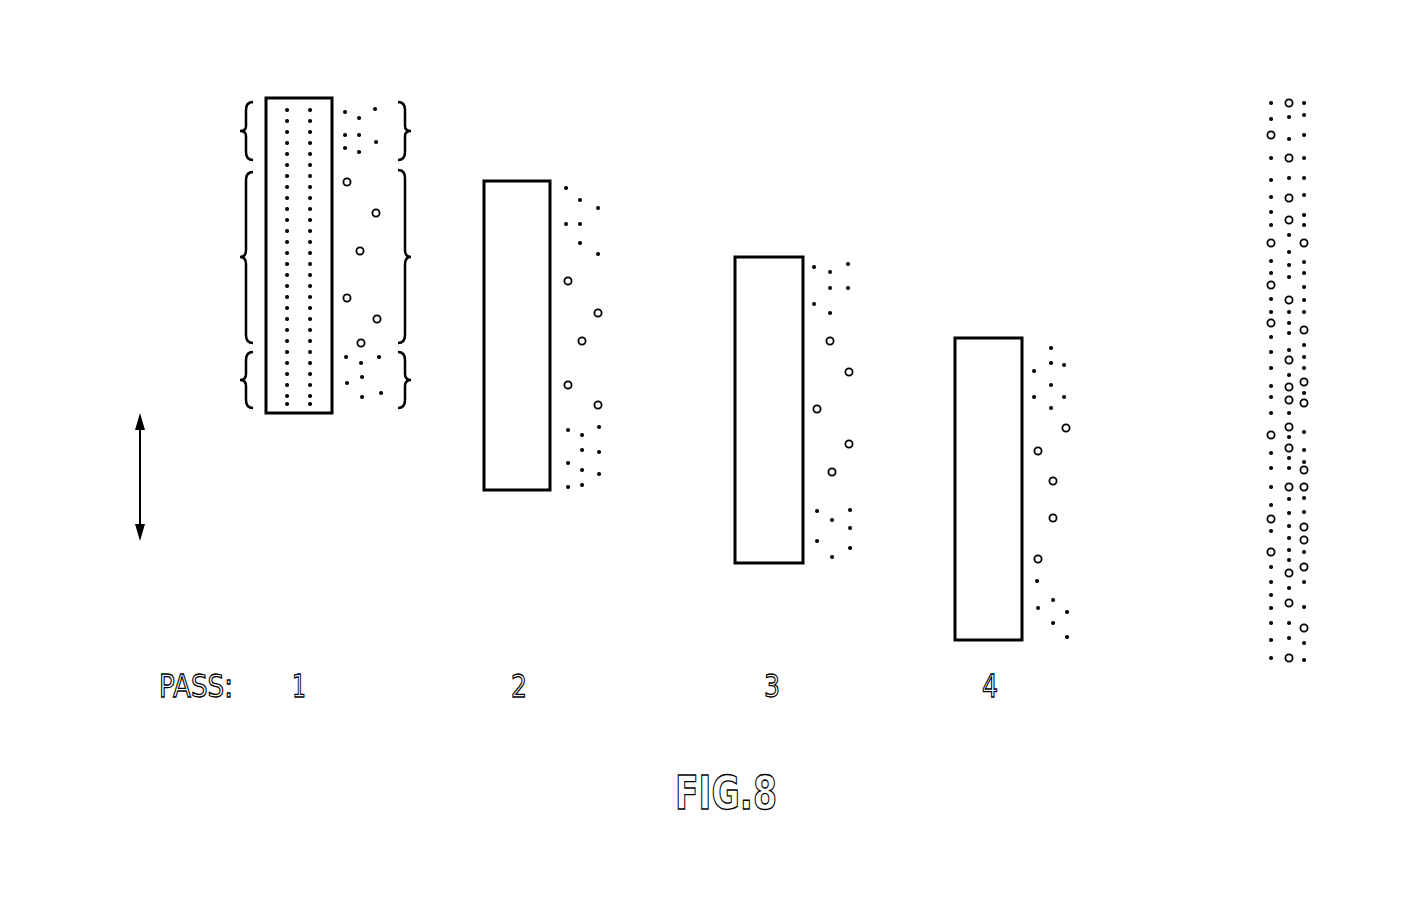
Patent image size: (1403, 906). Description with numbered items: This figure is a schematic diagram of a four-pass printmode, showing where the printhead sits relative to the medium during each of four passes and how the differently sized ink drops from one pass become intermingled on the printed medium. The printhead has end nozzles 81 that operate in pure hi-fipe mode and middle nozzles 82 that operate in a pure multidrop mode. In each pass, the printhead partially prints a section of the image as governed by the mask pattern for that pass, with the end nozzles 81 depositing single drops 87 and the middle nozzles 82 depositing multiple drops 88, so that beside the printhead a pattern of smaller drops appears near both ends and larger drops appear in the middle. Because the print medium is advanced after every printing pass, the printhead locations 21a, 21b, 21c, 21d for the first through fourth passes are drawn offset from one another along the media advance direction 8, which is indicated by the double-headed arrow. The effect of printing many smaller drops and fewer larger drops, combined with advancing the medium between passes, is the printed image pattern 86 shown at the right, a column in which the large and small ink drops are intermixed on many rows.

The printhead location for pass one 21a is at (297, 98).
The printhead location for pass two 21b is at (515, 180).
The printhead location for pass three 21c is at (768, 256).
The printhead location for pass four 21d is at (983, 338).
The end nozzles 81 is at (228, 255).
The middle nozzles 82 is at (225, 257).
The single drops 87 is at (396, 255).
The multiple drops 88 is at (396, 258).
The printed image pattern 86 is at (1298, 680).
The media advance direction 8 is at (152, 477).